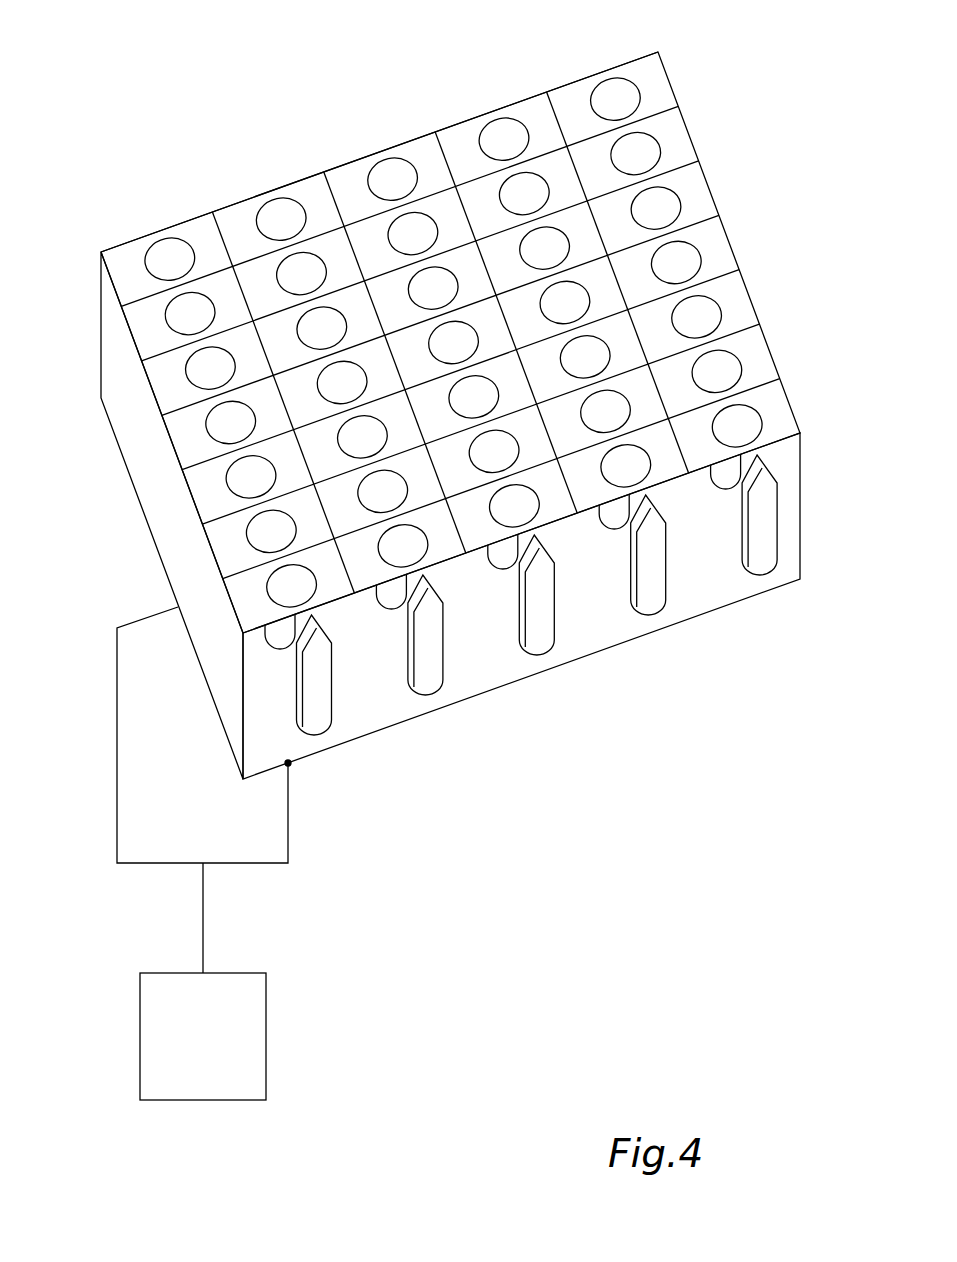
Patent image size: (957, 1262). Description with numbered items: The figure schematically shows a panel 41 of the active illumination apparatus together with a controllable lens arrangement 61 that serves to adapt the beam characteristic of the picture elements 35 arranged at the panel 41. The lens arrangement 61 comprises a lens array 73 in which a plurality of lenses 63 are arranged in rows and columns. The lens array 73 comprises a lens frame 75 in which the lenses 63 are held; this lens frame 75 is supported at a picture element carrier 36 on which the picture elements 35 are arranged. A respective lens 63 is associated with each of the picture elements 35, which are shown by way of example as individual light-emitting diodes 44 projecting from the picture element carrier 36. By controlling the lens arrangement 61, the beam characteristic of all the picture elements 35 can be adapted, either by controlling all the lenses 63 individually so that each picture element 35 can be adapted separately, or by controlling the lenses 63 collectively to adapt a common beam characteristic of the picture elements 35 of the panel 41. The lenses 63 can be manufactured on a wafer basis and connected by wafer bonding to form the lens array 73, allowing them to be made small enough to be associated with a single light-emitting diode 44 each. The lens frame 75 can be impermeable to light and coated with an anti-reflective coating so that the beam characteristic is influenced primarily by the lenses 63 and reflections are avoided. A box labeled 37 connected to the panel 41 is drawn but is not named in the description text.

The panel 41 is at (466, 551).
The lens frame 75 is at (568, 84).
The lens arrangement 61 is at (450, 319).
The lens 63 is at (390, 178).
The lens array 73 is at (134, 258).
The picture element 35 is at (568, 629).
The light-emitting diode 44 is at (318, 697).
The picture element carrier 36 is at (733, 580).
The control unit 37 is at (221, 1059).